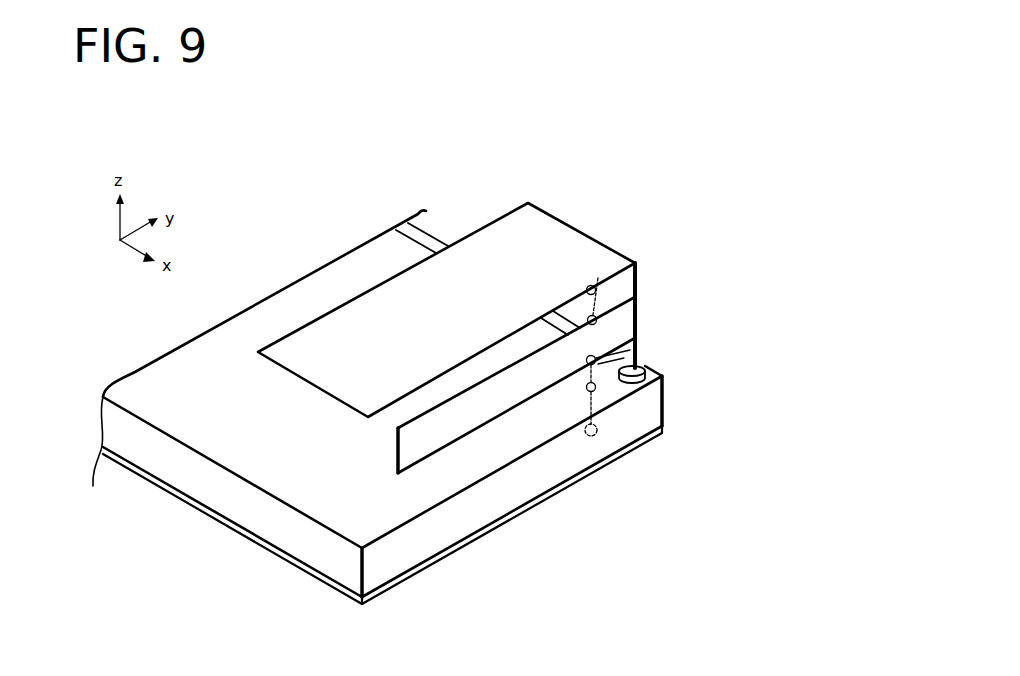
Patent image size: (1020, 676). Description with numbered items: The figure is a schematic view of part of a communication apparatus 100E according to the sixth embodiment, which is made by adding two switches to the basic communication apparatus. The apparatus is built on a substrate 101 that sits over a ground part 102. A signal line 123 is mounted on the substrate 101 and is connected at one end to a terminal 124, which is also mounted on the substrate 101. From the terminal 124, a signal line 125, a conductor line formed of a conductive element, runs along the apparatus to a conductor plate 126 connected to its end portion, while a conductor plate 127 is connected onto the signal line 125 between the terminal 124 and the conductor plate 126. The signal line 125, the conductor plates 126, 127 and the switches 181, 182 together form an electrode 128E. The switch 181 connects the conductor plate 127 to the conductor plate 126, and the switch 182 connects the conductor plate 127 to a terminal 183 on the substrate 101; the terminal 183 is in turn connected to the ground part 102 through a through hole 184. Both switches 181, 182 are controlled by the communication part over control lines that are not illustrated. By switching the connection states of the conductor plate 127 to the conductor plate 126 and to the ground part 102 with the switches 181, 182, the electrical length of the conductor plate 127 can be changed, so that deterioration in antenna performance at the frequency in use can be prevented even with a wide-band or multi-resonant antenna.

The communication apparatus 100E is at (311, 188).
The substrate 101 is at (366, 570).
The ground part 102 is at (180, 498).
The signal line 123 is at (428, 243).
The terminal 124 is at (645, 374).
The signal line 125 is at (638, 282).
The conductor plate 126 is at (488, 377).
The conductor plate 127 is at (565, 235).
The electrode 128E is at (738, 112).
The switch 181 is at (603, 297).
The switch 182 is at (640, 345).
The terminal 183 is at (587, 389).
The through hole 184 is at (593, 407).